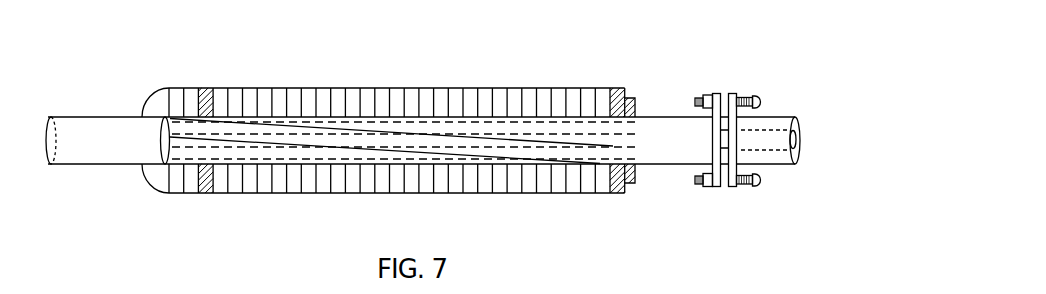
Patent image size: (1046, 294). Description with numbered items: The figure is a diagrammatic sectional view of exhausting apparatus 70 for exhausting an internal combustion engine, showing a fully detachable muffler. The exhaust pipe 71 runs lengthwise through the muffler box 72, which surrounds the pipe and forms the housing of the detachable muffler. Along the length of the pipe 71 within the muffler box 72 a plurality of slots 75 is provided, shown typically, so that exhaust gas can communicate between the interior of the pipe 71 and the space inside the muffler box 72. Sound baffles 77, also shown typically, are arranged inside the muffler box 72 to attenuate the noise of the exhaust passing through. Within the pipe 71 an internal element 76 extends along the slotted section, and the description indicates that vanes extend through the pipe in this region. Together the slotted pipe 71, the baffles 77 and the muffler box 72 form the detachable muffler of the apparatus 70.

The heat exchanger assembly 70 is at (423, 129).
The pipe 71 is at (683, 165).
The muffler box 72 is at (587, 193).
The slots 75 is at (549, 131).
The twisted tape insert 76 is at (443, 137).
The sound baffles 77 is at (185, 105).